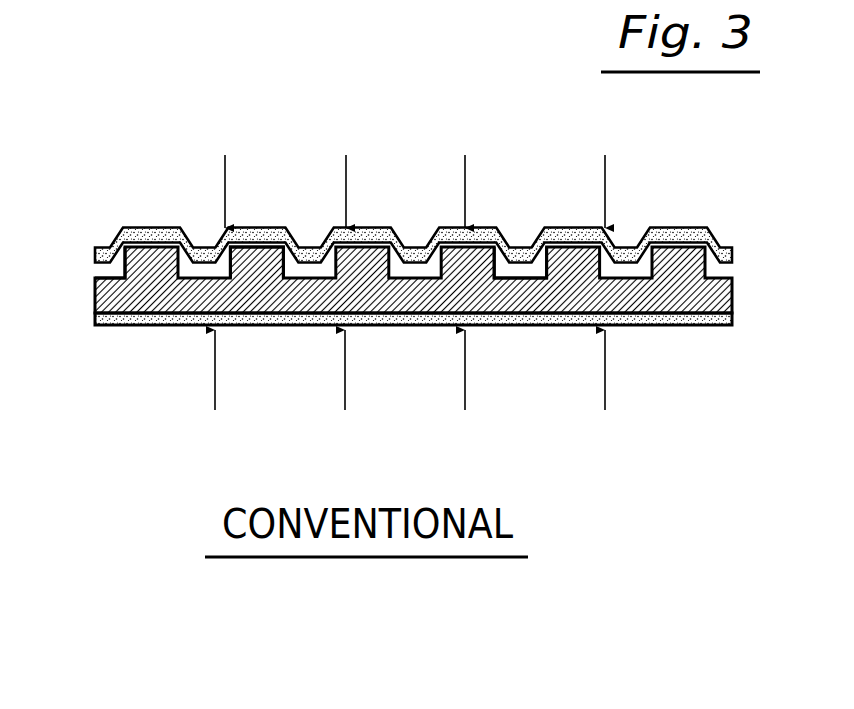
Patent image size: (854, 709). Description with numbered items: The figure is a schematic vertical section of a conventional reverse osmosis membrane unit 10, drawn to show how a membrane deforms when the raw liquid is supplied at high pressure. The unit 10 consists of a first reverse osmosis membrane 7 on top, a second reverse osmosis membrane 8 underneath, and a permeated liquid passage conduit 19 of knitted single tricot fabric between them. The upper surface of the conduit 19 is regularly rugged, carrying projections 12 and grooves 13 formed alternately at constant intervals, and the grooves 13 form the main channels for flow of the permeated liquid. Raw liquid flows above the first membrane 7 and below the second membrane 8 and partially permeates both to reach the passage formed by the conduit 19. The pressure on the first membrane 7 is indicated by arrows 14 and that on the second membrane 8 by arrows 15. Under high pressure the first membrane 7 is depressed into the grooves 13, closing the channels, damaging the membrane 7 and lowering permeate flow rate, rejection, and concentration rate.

The first reverse osmosis membrane 7 is at (673, 227).
The second reverse osmosis membrane 8 is at (683, 328).
The reverse osmosis membrane unit 10 is at (720, 302).
The projections 12 is at (258, 268).
The grooves 13 is at (516, 280).
The arrows 14 is at (346, 183).
The arrows 15 is at (345, 370).
The permeated liquid passage conduit 19 is at (144, 297).